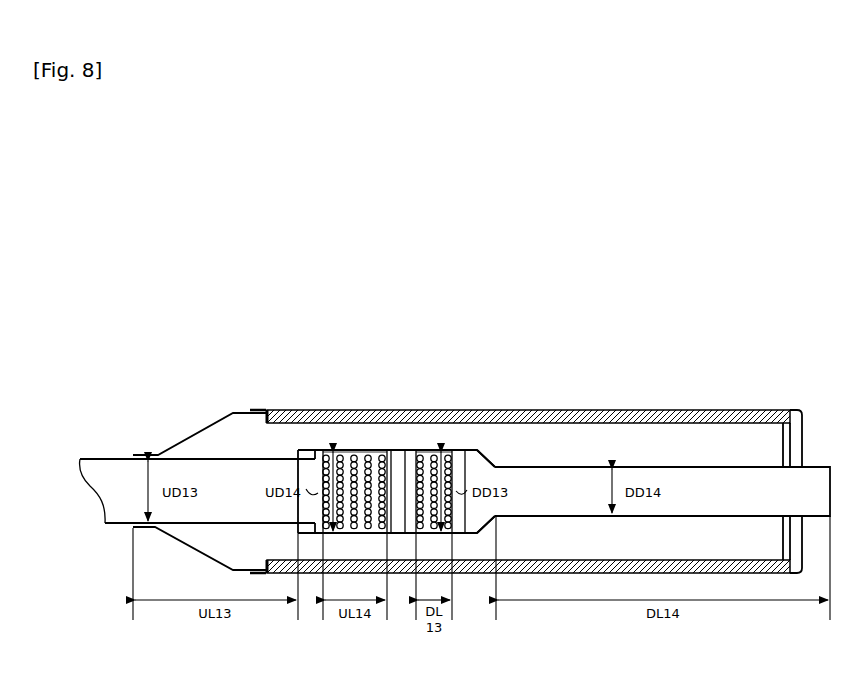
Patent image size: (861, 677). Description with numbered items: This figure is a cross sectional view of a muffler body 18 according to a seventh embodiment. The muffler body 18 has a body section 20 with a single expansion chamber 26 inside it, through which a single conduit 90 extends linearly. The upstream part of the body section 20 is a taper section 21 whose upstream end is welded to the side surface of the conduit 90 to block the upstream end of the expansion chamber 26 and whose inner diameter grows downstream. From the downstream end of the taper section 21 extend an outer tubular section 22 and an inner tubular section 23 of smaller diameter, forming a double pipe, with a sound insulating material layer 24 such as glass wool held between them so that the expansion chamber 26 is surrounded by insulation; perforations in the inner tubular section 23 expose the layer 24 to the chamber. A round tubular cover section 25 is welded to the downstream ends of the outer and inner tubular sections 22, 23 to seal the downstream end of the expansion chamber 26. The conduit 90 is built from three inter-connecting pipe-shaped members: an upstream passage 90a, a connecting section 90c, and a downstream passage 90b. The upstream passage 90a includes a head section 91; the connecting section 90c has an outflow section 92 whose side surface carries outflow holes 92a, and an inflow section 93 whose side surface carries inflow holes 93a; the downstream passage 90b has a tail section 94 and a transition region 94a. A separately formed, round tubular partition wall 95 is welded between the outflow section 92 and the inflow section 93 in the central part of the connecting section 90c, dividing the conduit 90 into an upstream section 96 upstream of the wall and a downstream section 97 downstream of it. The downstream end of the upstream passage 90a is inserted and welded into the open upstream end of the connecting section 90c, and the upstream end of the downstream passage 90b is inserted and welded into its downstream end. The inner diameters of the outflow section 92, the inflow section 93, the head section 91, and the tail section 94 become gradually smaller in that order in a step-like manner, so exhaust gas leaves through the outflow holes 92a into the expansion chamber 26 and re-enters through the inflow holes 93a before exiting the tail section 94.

The muffler body 18 is at (400, 205).
The body section 20 is at (98, 291).
The taper section 21 is at (190, 433).
The outer tubular section 22 is at (243, 410).
The inner tubular section 23 is at (285, 410).
The sound insulating material layer 24 is at (312, 410).
The cover section 25 is at (803, 442).
The expansion chamber 26 is at (702, 447).
The conduit 90 is at (333, 270).
The upstream passage 90a is at (105, 457).
The downstream passage 90b is at (630, 465).
The connecting section 90c is at (423, 449).
The head section 91 is at (281, 455).
The outflow section 92 is at (364, 450).
The outflow holes 92a is at (358, 450).
The inflow section 93 is at (447, 450).
The inflow holes 93a is at (452, 450).
The tail section 94 is at (593, 467).
The outlet cone transition 94a is at (487, 455).
The partition wall 95 is at (413, 461).
The upstream section 96 is at (310, 302).
The downstream section 97 is at (450, 302).